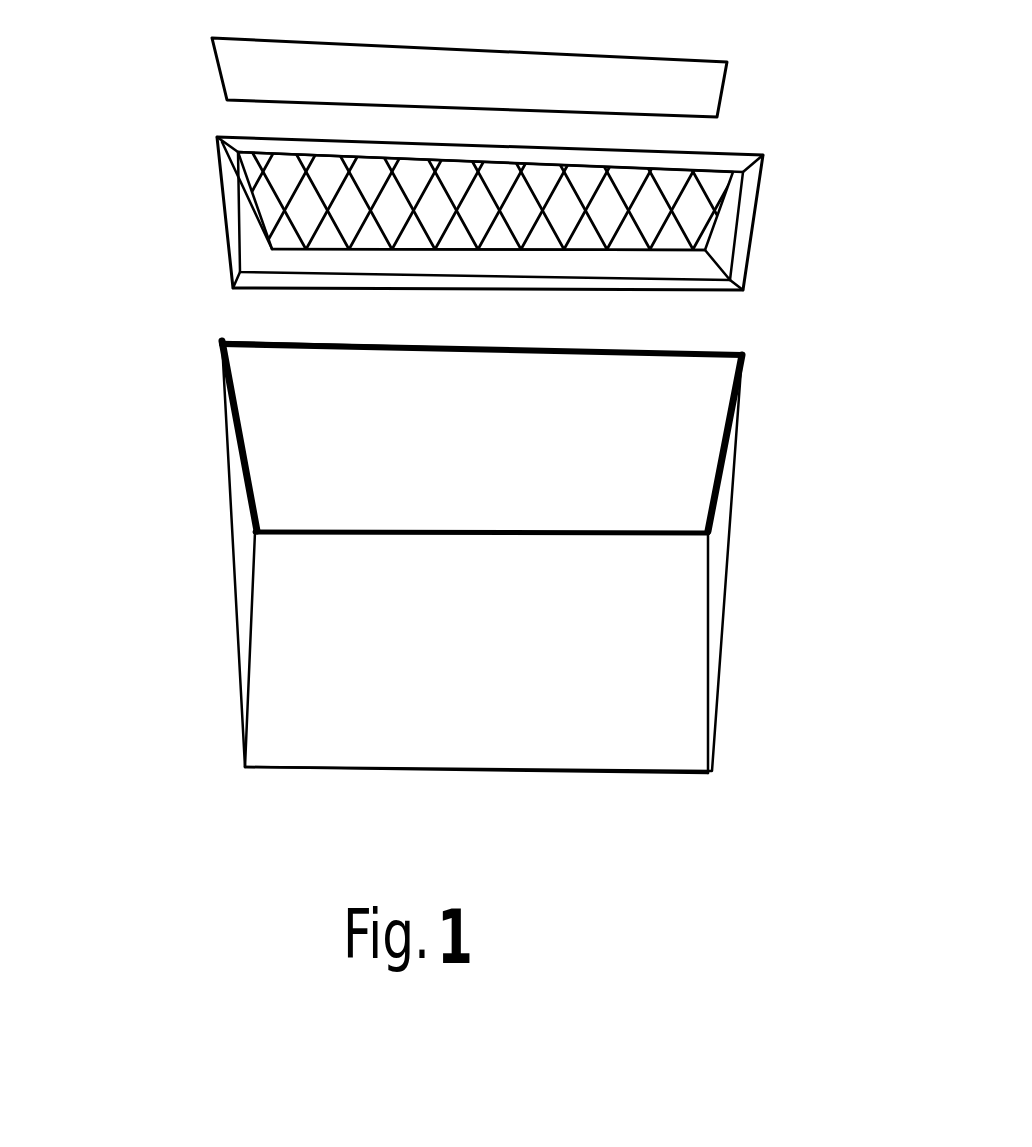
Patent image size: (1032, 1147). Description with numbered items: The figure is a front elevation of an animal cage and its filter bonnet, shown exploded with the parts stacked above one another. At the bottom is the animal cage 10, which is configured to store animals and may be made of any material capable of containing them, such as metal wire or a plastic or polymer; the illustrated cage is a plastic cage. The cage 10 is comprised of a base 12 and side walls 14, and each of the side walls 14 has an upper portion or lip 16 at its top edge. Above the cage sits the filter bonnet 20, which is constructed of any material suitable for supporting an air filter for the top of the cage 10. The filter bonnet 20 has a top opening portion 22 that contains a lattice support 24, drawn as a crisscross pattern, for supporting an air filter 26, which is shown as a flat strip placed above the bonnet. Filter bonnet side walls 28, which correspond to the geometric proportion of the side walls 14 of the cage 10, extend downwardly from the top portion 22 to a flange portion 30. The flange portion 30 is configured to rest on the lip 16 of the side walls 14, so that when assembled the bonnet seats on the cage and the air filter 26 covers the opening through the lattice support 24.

The animal cage 10 is at (561, 587).
The base 12 is at (597, 773).
The side walls 14 is at (637, 630).
The lip 16 is at (742, 353).
The filter bonnet 20 is at (476, 193).
The top opening portion 22 is at (280, 185).
The lattice support 24 is at (297, 230).
The air filter 26 is at (727, 62).
The filter bonnet side walls 28 is at (727, 212).
The flange portion 30 is at (747, 237).